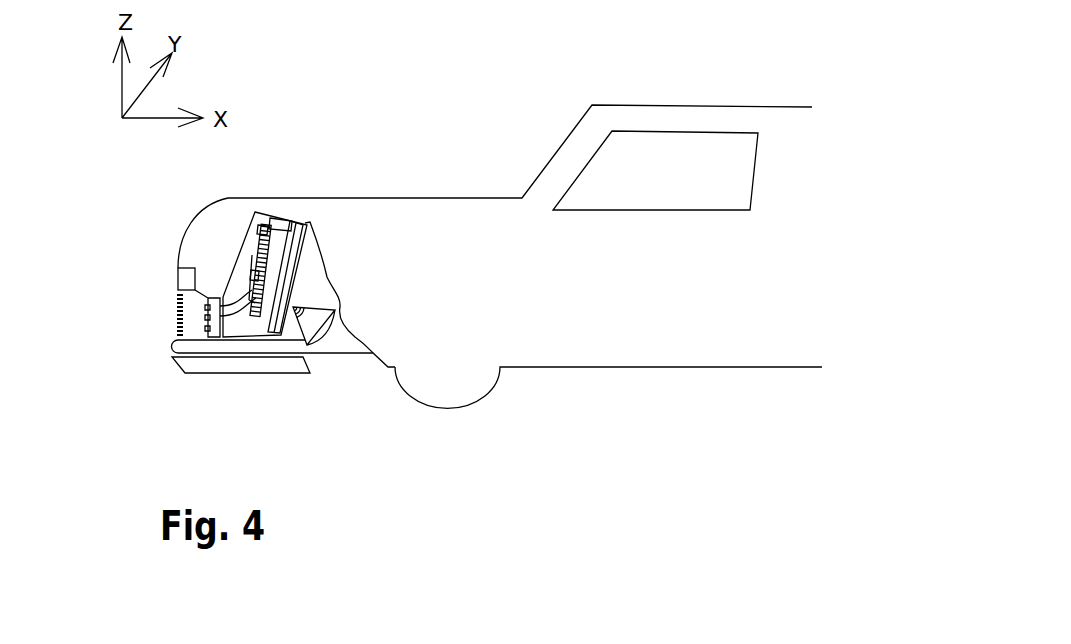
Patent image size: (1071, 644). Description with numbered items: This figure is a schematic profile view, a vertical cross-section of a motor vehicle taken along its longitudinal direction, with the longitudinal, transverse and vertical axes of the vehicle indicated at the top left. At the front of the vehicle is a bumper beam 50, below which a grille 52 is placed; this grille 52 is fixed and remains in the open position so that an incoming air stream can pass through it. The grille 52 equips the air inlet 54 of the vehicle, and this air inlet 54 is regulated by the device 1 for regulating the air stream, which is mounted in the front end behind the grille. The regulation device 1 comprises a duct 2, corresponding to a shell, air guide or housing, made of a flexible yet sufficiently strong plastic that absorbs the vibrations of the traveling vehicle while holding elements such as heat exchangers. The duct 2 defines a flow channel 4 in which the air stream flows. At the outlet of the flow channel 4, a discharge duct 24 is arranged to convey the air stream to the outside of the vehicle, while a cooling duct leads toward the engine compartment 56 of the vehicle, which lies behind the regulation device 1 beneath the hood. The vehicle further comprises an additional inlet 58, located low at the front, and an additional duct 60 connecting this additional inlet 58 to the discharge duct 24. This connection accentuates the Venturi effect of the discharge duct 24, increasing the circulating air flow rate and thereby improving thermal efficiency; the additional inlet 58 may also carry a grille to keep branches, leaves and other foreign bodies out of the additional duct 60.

The device for regulating an air stream 1 is at (376, 252).
The duct 2 is at (320, 248).
The flow channel 4 is at (318, 290).
The discharge duct 24 is at (343, 355).
The bumper beam 50 is at (182, 279).
The grille 52 is at (168, 312).
The air inlet 54 is at (105, 313).
The engine compartment 56 is at (431, 288).
The additional inlet 58 is at (167, 350).
The additional duct 60 is at (250, 358).